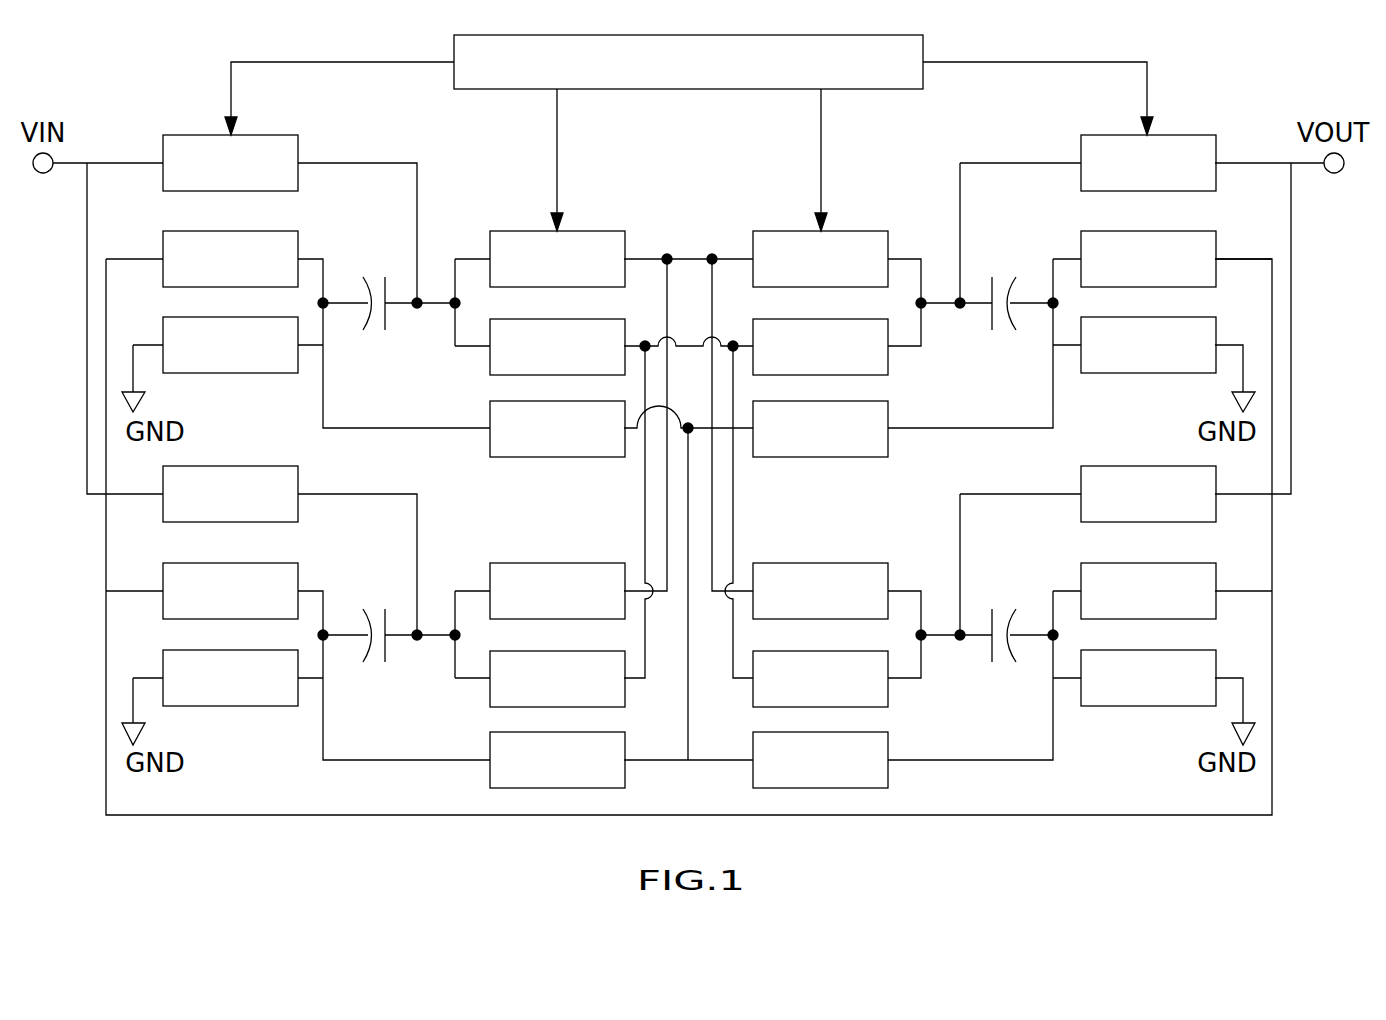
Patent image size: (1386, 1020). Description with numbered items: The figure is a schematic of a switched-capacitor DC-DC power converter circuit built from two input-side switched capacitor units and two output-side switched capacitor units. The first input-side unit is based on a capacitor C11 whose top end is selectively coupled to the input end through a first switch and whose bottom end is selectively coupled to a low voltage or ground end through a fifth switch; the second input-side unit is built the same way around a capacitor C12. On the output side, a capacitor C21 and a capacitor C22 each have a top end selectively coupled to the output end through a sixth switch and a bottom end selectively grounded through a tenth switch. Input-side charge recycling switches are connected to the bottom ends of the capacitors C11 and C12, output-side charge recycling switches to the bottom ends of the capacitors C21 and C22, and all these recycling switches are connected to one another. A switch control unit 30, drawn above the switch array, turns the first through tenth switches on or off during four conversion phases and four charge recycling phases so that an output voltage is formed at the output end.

The switch control unit 30 is at (676, 75).
The capacitor C11 is at (371, 286).
The capacitor C12 is at (371, 619).
The capacitor C21 is at (999, 286).
The capacitor C22 is at (999, 619).